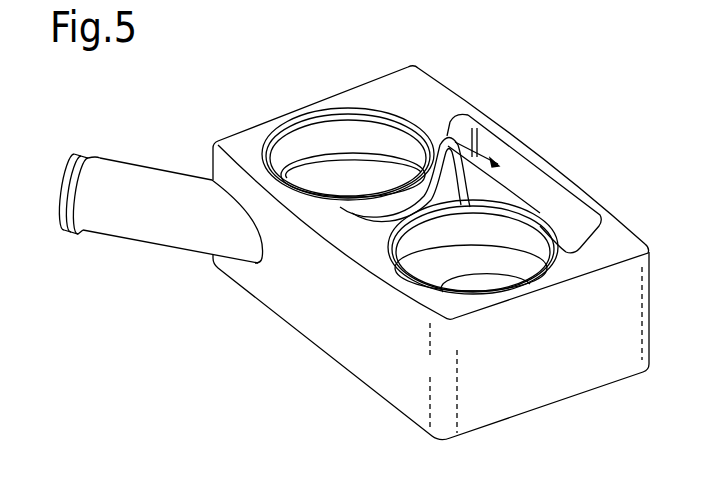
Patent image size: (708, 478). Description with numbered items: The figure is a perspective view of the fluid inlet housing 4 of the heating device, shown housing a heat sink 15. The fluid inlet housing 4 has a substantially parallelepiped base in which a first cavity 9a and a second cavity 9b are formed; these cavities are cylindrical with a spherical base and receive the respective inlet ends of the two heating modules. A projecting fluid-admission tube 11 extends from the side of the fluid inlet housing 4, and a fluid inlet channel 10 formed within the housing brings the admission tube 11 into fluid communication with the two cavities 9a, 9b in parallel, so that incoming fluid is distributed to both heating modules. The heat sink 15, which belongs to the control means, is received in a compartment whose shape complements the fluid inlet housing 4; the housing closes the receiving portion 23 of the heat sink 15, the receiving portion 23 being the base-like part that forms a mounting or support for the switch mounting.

The fluid inlet housing 4 is at (605, 195).
The first cavity 9a is at (318, 172).
The second cavity 9b is at (392, 245).
The fluid inlet channel 10 is at (277, 133).
The fluid-admission tube 11 is at (67, 183).
The heat sink 15 is at (463, 128).
The receiving portion 23 is at (492, 163).